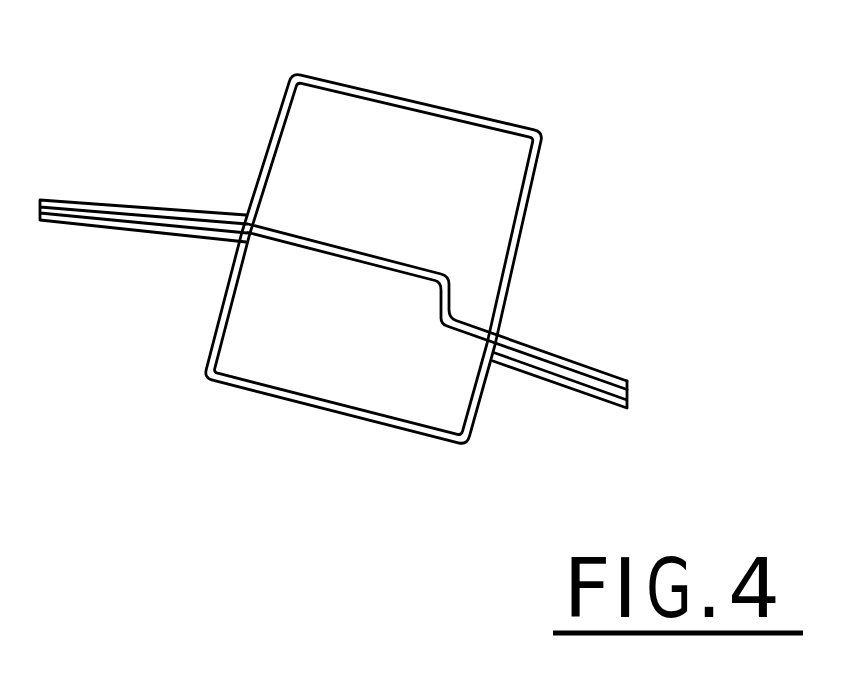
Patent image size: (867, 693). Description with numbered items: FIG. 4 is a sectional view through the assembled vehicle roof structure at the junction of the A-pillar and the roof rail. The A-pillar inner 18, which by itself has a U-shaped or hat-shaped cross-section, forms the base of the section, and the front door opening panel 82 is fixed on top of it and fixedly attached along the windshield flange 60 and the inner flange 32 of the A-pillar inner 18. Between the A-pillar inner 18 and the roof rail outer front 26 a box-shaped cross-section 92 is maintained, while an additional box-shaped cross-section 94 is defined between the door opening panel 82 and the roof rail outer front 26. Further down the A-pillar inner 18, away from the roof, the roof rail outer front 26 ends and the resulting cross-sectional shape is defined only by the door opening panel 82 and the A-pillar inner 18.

The A-pillar inner 18 is at (370, 423).
The front door opening panel 82 is at (278, 103).
The windshield flange 60 is at (127, 230).
The roof rail outer front 26 is at (457, 293).
The inner flange 32 is at (565, 387).
The additional box-shaped cross-section 94 is at (469, 171).
The box-shaped cross-section 92 is at (274, 335).